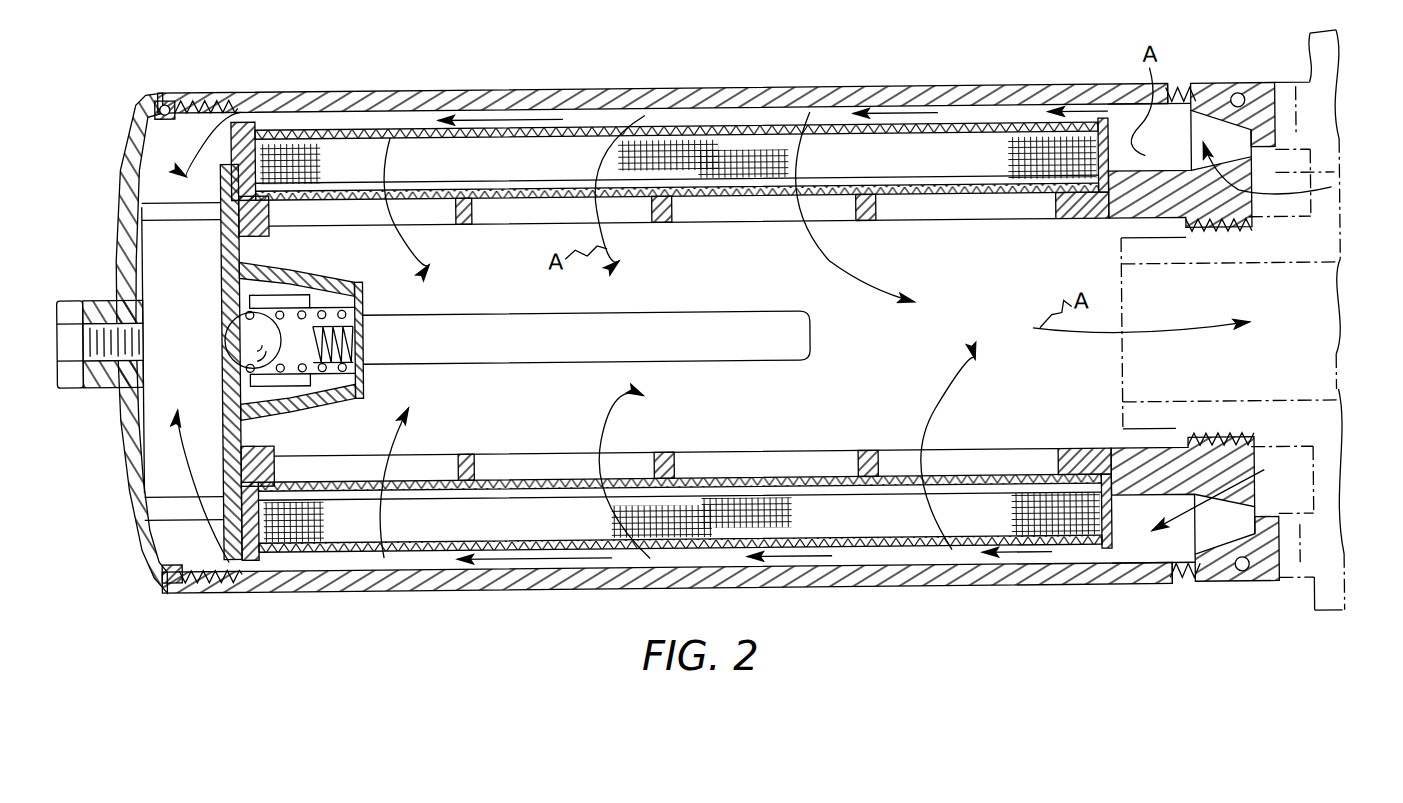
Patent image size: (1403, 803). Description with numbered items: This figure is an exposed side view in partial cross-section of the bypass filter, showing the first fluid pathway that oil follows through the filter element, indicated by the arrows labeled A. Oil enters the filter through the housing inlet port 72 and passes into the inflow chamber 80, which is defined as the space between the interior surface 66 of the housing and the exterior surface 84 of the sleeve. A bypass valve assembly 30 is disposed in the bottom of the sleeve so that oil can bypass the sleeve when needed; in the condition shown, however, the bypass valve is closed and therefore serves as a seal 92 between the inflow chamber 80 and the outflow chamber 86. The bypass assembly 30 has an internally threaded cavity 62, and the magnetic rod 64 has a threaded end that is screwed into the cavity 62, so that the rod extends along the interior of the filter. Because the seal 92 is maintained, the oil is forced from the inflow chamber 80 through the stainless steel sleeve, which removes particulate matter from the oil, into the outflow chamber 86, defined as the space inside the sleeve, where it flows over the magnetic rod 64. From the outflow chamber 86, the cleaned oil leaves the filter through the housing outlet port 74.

The bypass valve assembly 30 is at (298, 270).
The internally threaded cavity 62 is at (348, 390).
The magnetic rod 64 is at (712, 362).
The interior surface 66 is at (424, 110).
The housing inlet port 72 is at (1317, 180).
The housing outlet port 74 is at (1283, 348).
The inflow chamber 80 is at (772, 108).
The exterior surface 84 is at (336, 126).
The outflow chamber 86 is at (999, 321).
The seal 92 is at (227, 333).